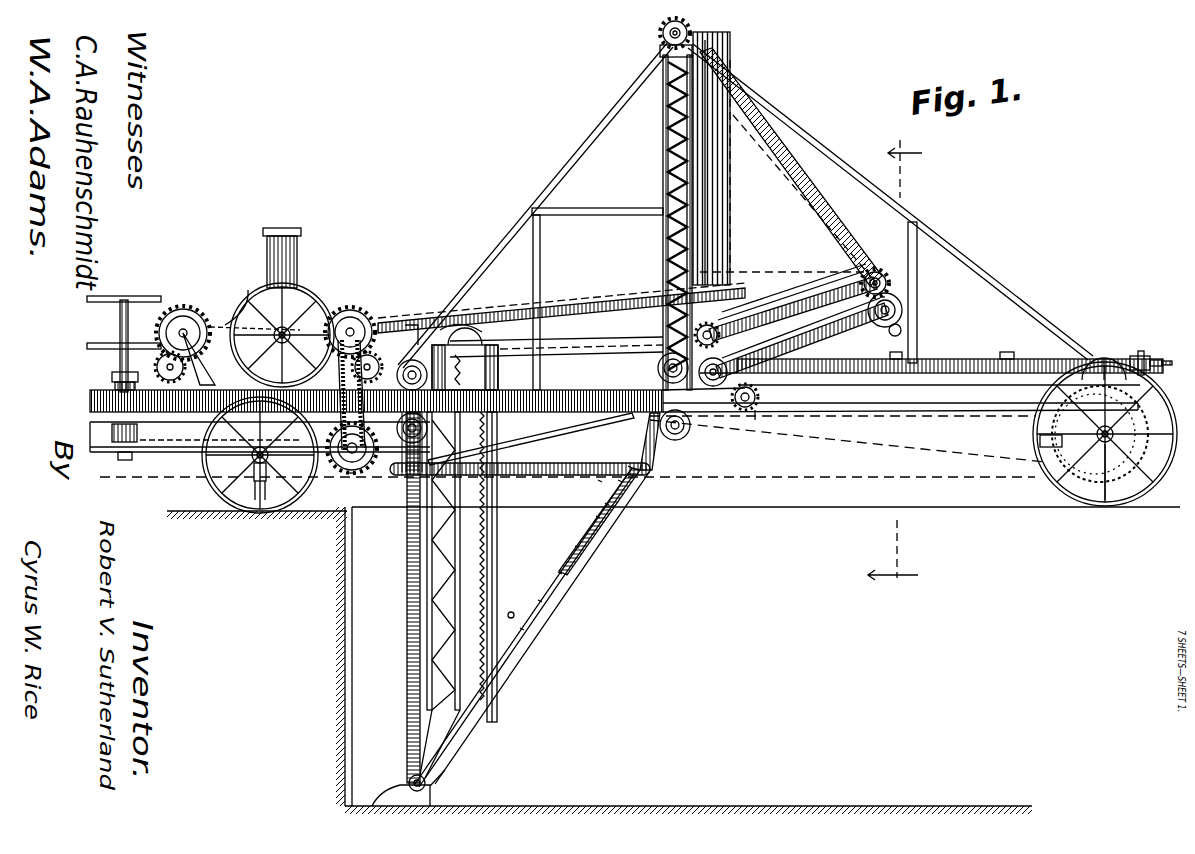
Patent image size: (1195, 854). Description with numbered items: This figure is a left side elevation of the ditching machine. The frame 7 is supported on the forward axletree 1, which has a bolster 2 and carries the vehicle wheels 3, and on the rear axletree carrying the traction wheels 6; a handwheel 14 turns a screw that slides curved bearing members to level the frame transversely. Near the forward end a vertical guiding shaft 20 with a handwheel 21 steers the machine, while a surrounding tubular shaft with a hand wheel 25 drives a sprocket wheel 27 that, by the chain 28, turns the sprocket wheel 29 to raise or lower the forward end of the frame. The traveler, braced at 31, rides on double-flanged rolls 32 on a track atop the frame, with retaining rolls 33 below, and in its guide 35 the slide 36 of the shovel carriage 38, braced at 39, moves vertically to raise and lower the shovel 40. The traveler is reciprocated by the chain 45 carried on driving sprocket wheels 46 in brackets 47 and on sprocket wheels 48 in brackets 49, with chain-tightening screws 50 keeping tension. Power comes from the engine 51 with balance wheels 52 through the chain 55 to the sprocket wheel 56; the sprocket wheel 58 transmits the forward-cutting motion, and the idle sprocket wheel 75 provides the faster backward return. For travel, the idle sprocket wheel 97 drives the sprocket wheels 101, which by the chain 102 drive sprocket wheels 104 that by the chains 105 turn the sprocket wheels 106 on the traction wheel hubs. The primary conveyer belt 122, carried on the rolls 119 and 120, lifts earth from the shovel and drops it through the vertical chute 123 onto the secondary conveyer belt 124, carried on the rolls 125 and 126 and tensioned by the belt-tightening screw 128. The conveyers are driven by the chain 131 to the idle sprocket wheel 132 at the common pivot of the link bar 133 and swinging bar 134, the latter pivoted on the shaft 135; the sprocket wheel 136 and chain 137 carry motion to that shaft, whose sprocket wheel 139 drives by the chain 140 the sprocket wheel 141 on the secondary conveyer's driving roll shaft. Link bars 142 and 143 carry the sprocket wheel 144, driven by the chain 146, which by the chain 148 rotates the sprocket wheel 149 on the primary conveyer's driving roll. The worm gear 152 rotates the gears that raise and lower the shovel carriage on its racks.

The forward axletree 1 is at (258, 464).
The bolster 2 is at (895, 359).
The vehicle wheels 3 is at (212, 465).
The traction wheels 6 is at (1109, 434).
The frame 7 is at (915, 404).
The handwheel 14 is at (1104, 356).
The vertical guiding shaft 20 is at (120, 327).
The handwheel 21 is at (90, 300).
The hand wheel 25 is at (95, 347).
The sprocket wheel 27 is at (112, 436).
The chain 28 is at (200, 440).
The sprocket wheel 29 is at (220, 447).
The brace 31 is at (557, 215).
The double-flanged rolls 32 is at (410, 360).
The retaining rolls 33 is at (405, 445).
The guide 35 is at (664, 135).
The slide 36 is at (418, 661).
The shovel carriage 38 is at (396, 597).
The brace 39 is at (618, 538).
The shovel 40 is at (406, 782).
The chain 45 is at (815, 418).
The driving sprocket wheels 46 is at (340, 462).
The brackets 47 is at (280, 500).
The sprocket wheels 48 is at (1064, 470).
The brackets 49 is at (1048, 448).
The chain-tightening screws 50 is at (1030, 440).
The engine 51 is at (292, 252).
The balance wheels 52 is at (302, 300).
The chain 55 is at (248, 292).
The sprocket wheel 56 is at (178, 308).
The sprocket wheel 58 is at (188, 322).
The idle sprocket wheel 75 is at (349, 475).
The idle sprocket wheel 97 is at (128, 375).
The sprocket wheels 101 is at (407, 322).
The chain 102 is at (590, 385).
The sprocket wheels 104 is at (757, 413).
The chains 105 is at (572, 448).
The sprocket wheels 106 is at (1118, 468).
The roll 119 is at (440, 790).
The roll 120 is at (560, 537).
The primary conveyer belt 122 is at (580, 494).
The vertical chute 123 is at (730, 218).
The secondary conveyer belt 124 is at (957, 360).
The roll 125 is at (1133, 355).
The roll 126 is at (895, 366).
The belt-tightening screw 128 is at (1165, 360).
The chain 131 is at (512, 325).
The idle sprocket wheel 132 is at (892, 288).
The link bar 133 is at (636, 305).
The swinging bar 134 is at (815, 225).
The shaft 135 is at (692, 35).
The sprocket wheel 136 is at (878, 270).
The chain 137 is at (818, 215).
The sprocket wheel 139 is at (535, 203).
The chain 140 is at (718, 183).
The sprocket wheel 141 is at (732, 400).
The link bar 142 is at (778, 350).
The link bar 143 is at (790, 305).
The sprocket wheel 144 is at (903, 311).
The chain 146 is at (927, 335).
The chain 148 is at (722, 325).
The sprocket wheel 149 is at (556, 336).
The worm gear 152 is at (458, 330).